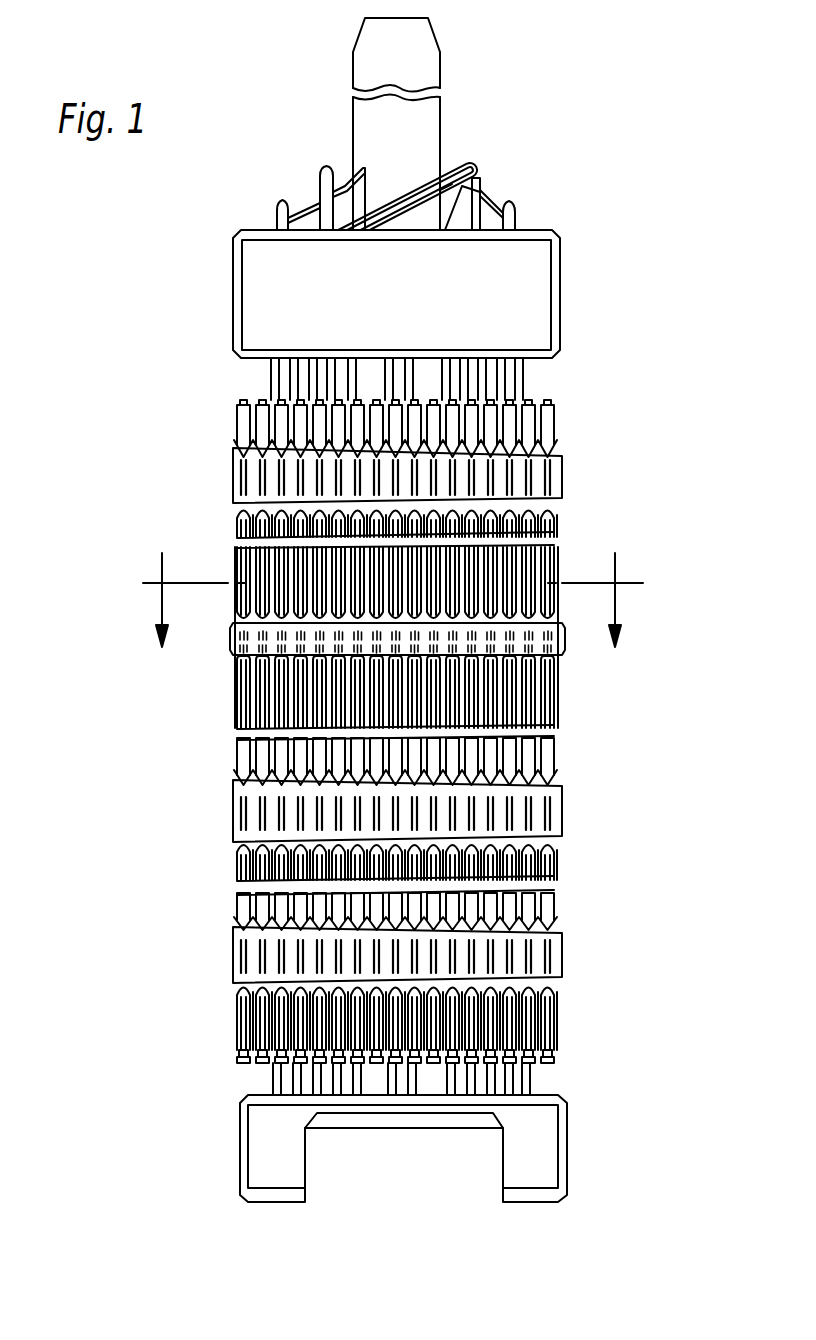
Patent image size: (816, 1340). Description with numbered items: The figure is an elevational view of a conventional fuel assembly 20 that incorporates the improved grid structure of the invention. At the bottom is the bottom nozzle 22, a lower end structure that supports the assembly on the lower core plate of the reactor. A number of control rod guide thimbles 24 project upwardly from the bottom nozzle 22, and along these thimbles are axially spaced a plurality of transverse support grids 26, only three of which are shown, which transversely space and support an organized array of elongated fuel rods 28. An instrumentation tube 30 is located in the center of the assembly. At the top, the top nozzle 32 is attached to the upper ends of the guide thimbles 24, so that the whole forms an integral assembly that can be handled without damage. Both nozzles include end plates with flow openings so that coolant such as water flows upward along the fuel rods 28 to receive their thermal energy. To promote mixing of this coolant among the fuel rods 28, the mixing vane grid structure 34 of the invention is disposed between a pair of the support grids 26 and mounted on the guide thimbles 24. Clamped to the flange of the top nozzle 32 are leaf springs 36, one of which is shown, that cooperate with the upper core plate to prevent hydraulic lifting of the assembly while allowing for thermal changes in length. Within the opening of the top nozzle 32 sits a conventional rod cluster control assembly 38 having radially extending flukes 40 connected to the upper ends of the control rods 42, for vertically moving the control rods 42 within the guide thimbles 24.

The fuel assembly 20 is at (642, 435).
The bottom nozzle 22 is at (538, 1145).
The control rod guide thimbles 24 is at (275, 378).
The transverse support grids 26 is at (560, 480).
The fuel rods 28 is at (553, 428).
The instrumentation tube 30 is at (397, 1080).
The top nozzle 32 is at (535, 289).
The mixing vane grid structure 34 is at (574, 652).
The leaf springs 36 is at (455, 160).
The rod cluster control assembly 38 is at (430, 116).
The flukes 40 is at (487, 210).
The control rods 42 is at (519, 216).